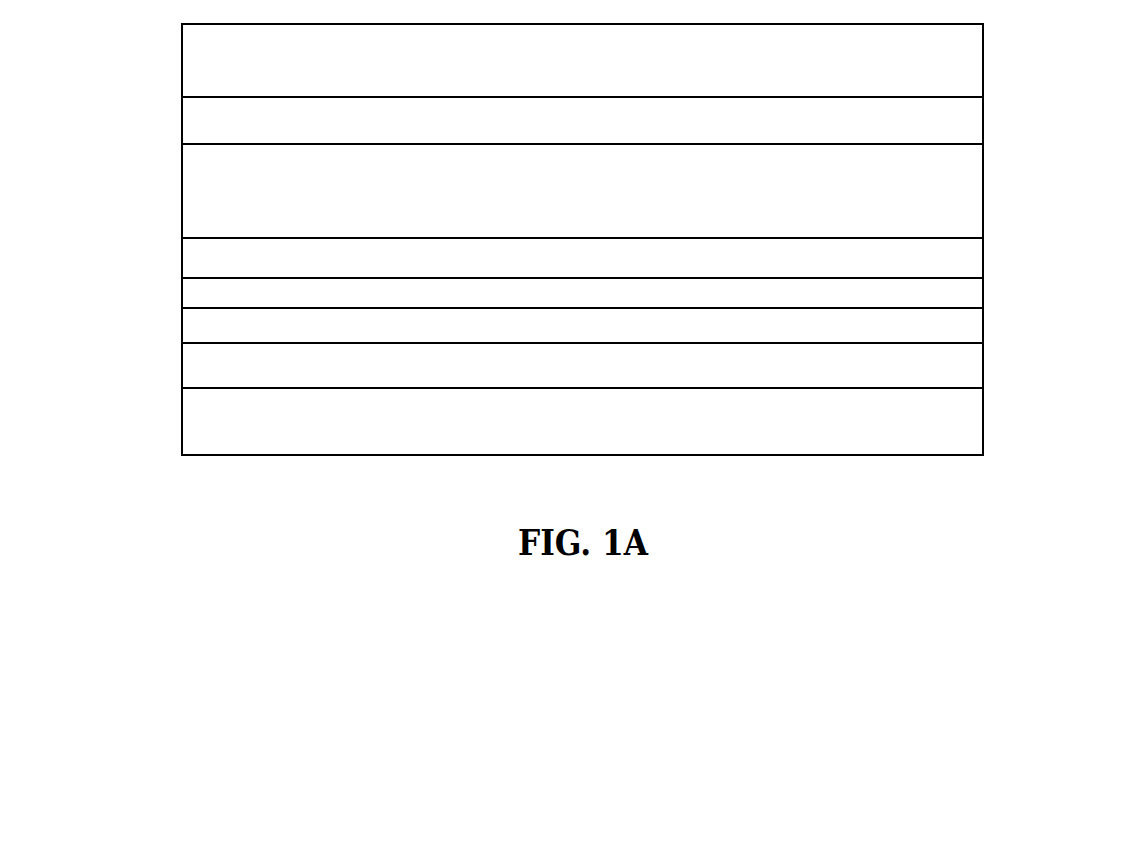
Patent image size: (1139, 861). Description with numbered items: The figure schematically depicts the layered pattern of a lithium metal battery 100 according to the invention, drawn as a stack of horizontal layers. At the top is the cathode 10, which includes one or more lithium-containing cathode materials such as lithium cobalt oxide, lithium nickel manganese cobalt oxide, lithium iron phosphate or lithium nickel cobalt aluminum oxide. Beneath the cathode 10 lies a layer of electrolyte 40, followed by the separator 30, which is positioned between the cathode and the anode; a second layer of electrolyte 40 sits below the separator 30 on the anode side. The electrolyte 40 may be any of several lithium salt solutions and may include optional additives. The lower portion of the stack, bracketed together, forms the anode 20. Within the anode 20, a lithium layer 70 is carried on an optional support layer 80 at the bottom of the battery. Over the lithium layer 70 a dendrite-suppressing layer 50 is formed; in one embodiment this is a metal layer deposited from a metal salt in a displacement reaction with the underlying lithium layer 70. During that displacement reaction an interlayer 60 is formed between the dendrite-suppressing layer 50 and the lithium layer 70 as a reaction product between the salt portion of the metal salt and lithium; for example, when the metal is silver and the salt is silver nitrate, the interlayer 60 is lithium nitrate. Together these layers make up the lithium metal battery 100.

The lithium metal battery 100 is at (1018, 123).
The cathode 10 is at (571, 73).
The electrolyte 40 is at (571, 139).
The separator 30 is at (571, 208).
The anode 20 is at (170, 278).
The dendrite-suppressing layer 50 is at (573, 305).
The interlayer 60 is at (573, 336).
The lithium layer 70 is at (573, 384).
The support layer 80 is at (573, 434).